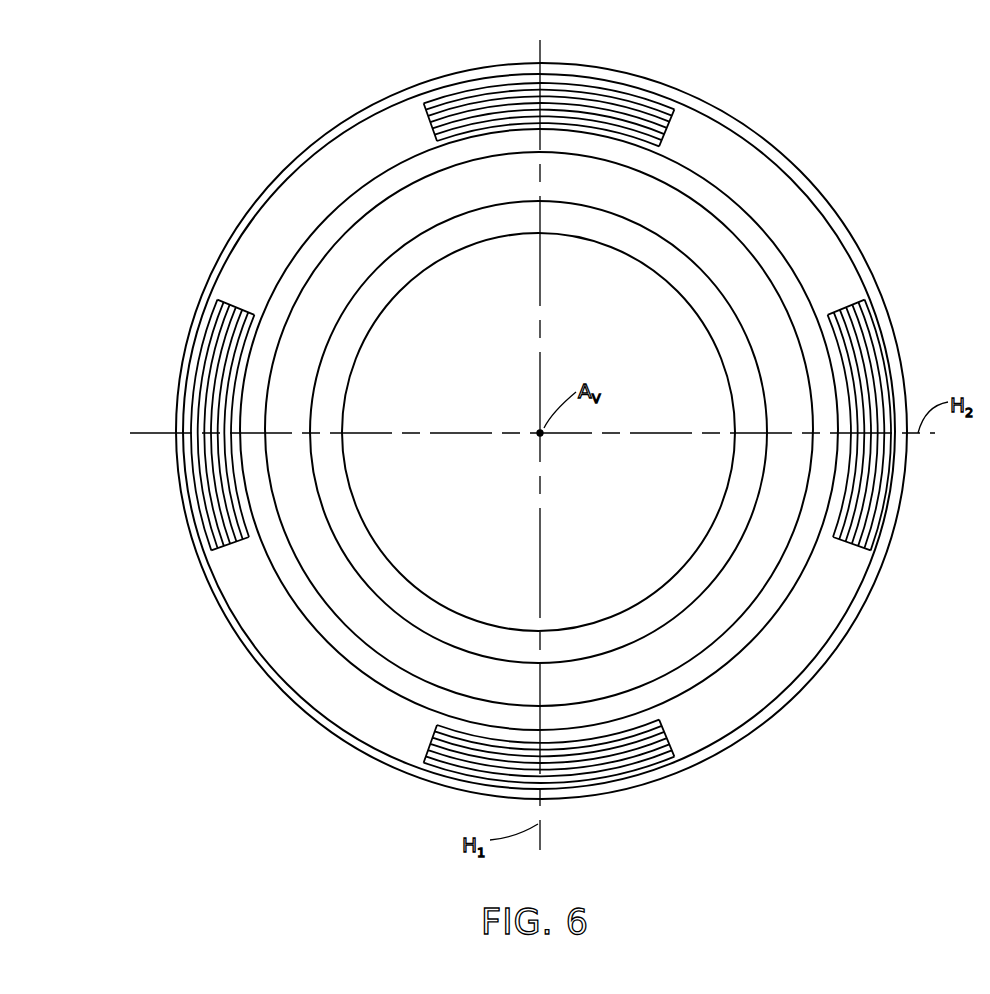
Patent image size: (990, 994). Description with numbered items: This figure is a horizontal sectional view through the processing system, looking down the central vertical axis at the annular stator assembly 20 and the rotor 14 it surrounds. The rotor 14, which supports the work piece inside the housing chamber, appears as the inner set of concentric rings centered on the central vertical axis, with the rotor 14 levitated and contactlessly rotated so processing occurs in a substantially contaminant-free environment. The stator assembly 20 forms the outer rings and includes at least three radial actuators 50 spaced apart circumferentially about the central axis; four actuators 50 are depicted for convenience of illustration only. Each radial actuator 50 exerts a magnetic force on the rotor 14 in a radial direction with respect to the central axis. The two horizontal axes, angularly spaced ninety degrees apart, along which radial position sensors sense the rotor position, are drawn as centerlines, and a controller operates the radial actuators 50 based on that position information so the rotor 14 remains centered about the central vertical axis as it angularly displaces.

The rotor 14 is at (725, 642).
The annular stator assembly 20 is at (897, 233).
The radial actuator 50 is at (580, 88).